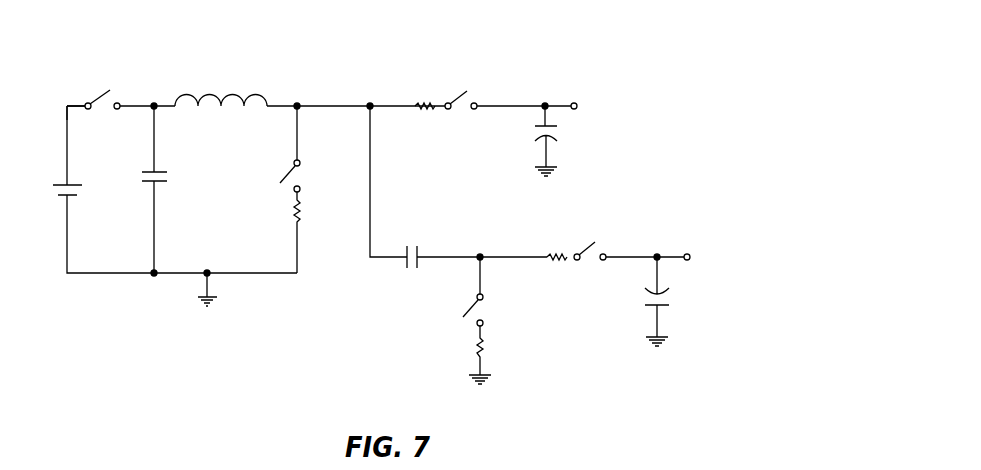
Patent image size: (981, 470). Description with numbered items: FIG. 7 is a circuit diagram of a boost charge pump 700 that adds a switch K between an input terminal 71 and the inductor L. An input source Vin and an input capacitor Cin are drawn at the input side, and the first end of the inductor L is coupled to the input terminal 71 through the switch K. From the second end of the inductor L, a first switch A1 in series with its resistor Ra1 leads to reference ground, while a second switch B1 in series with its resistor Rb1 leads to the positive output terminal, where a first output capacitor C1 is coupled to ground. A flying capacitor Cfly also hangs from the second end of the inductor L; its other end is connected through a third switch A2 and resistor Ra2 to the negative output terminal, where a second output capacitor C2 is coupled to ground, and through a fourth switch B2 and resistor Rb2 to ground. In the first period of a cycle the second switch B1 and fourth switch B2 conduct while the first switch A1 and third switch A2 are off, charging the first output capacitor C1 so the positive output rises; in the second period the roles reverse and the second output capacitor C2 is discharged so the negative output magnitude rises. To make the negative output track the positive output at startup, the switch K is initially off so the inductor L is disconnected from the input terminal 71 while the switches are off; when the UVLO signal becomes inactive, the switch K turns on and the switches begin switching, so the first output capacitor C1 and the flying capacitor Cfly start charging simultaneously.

The boost charge pump 700 is at (374, 211).
The input terminal 71 is at (68, 106).
The switch K is at (102, 91).
The inductor L is at (221, 86).
The input voltage source Vin is at (58, 176).
The input capacitor Cin is at (165, 189).
The first switch A1 is at (275, 149).
The resistor Ra1 is at (278, 232).
The resistor Rb1 is at (422, 95).
The second switch B1 is at (467, 89).
The first output capacitor C1 is at (565, 141).
The flying capacitor Cfly is at (408, 245).
The resistor Ra2 is at (552, 242).
The third switch A2 is at (591, 240).
The second output capacitor C2 is at (642, 301).
The fourth switch B2 is at (456, 291).
The resistor Rb2 is at (465, 355).